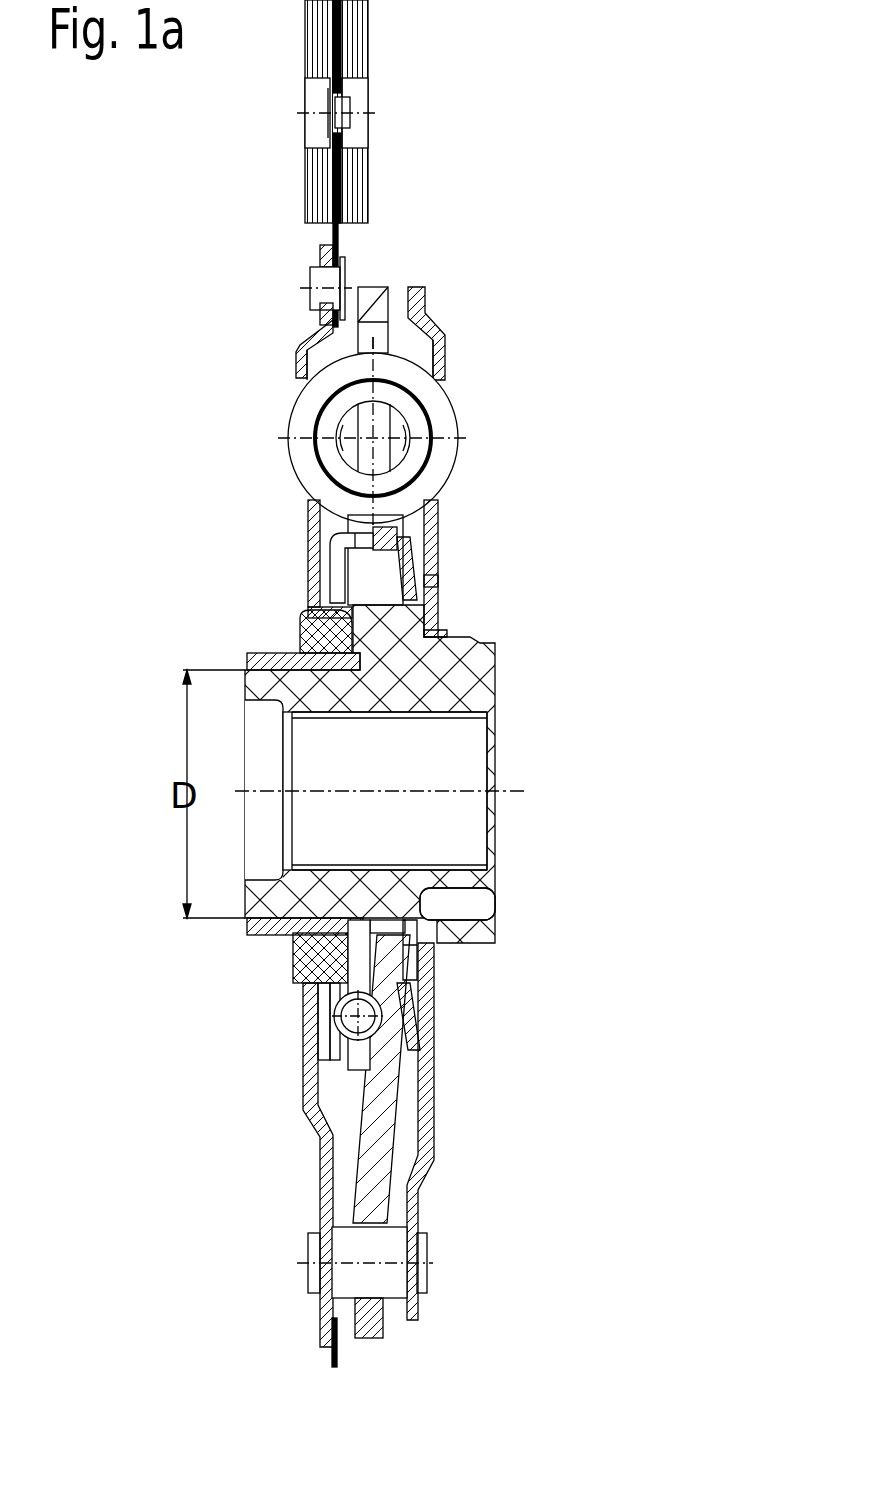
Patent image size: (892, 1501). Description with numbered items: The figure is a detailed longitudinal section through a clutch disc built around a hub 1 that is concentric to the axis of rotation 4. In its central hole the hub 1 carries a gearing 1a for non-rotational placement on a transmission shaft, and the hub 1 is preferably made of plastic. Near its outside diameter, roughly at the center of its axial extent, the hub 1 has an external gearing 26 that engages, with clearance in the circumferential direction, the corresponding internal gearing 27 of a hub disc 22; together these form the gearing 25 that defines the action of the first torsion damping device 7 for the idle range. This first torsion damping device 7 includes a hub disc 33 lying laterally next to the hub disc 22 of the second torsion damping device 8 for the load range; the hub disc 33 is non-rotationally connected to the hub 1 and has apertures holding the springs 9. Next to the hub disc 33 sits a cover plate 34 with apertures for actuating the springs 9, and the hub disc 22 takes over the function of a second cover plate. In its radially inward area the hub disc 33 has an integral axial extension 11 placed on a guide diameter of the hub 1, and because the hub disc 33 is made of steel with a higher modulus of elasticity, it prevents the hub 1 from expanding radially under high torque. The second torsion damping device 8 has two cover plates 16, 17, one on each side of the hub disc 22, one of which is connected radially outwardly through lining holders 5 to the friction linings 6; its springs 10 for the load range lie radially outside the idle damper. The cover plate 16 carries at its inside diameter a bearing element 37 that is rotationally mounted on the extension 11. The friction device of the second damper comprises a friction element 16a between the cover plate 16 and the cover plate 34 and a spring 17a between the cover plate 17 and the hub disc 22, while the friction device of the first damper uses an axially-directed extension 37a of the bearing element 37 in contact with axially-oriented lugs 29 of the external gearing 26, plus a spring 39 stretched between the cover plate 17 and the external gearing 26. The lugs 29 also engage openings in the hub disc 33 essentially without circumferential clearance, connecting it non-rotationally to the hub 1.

The hub 1 is at (483, 682).
The gearing 1a is at (448, 716).
The axis of rotation 4 is at (512, 791).
The lining holders 5 is at (340, 242).
The friction linings 6 is at (357, 63).
The first torsion damping device 7 is at (292, 1035).
The second torsion damping device 8 is at (507, 428).
The springs 9 is at (385, 1020).
The springs 10 is at (303, 422).
The axial extension 11 is at (262, 922).
The cover plate 16 is at (320, 330).
The friction element 16a is at (308, 585).
The cover plate 17 is at (423, 300).
The spring 17a is at (440, 585).
The hub disc 22 is at (372, 1158).
The gearing 25 is at (438, 582).
The external gearing 26 is at (438, 605).
The internal gearing 27 is at (485, 938).
The lugs 29 is at (310, 602).
The hub disc 33 is at (437, 523).
The cover plate 34 is at (335, 540).
The bearing element 37 is at (293, 968).
The axially-directed extension 37a is at (300, 645).
The spring 39 is at (438, 628).